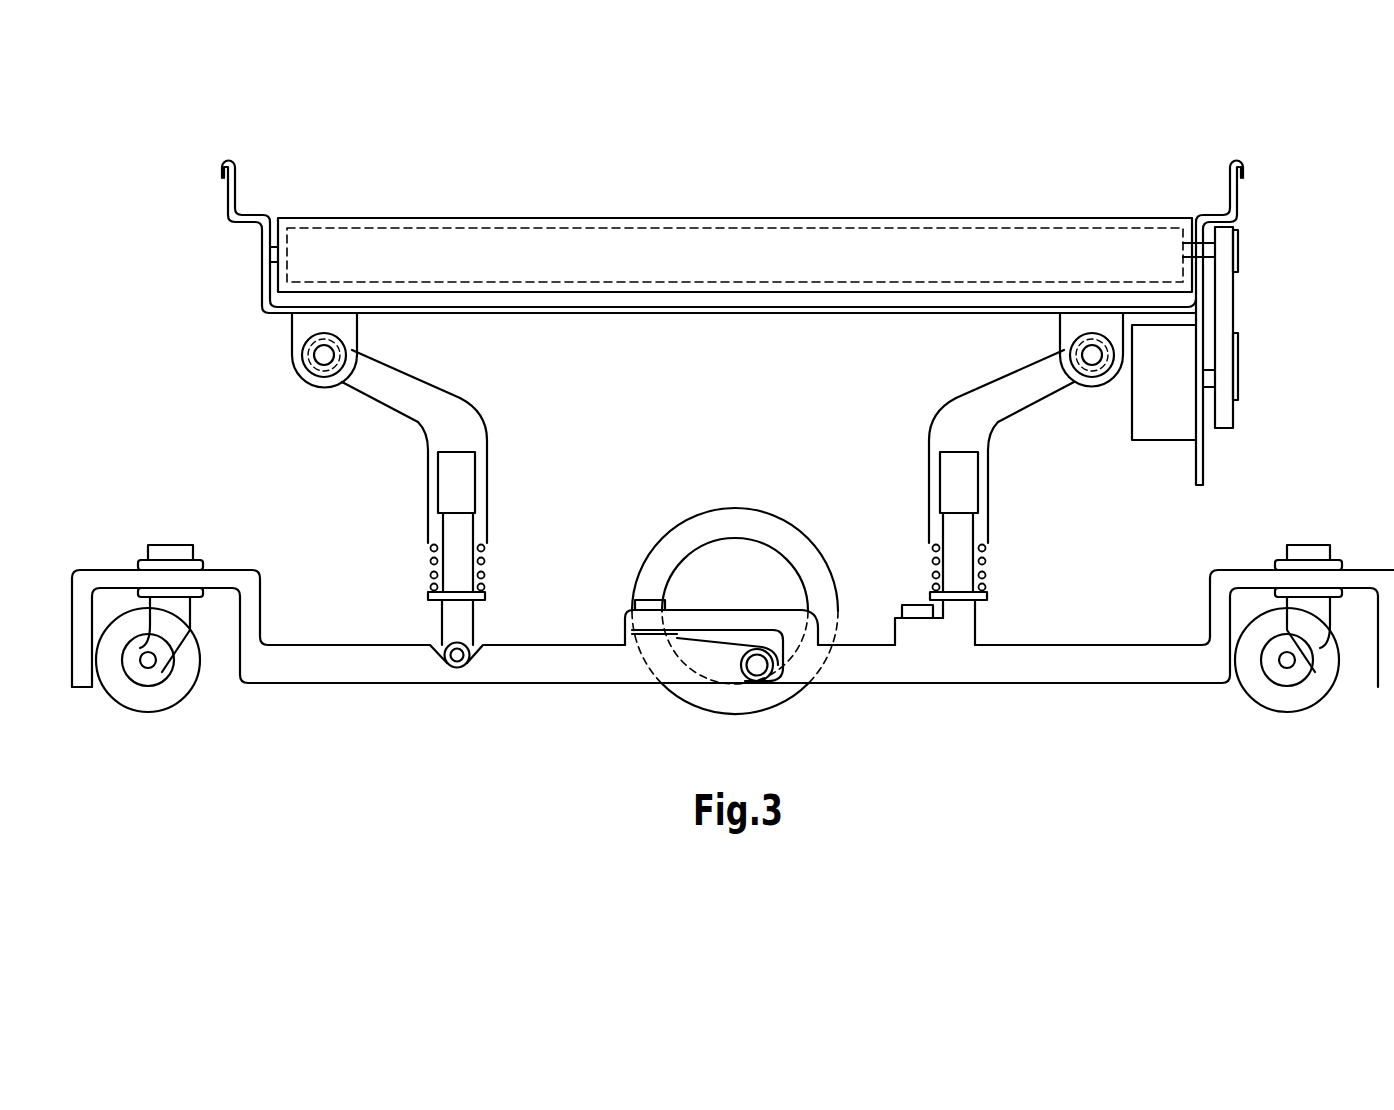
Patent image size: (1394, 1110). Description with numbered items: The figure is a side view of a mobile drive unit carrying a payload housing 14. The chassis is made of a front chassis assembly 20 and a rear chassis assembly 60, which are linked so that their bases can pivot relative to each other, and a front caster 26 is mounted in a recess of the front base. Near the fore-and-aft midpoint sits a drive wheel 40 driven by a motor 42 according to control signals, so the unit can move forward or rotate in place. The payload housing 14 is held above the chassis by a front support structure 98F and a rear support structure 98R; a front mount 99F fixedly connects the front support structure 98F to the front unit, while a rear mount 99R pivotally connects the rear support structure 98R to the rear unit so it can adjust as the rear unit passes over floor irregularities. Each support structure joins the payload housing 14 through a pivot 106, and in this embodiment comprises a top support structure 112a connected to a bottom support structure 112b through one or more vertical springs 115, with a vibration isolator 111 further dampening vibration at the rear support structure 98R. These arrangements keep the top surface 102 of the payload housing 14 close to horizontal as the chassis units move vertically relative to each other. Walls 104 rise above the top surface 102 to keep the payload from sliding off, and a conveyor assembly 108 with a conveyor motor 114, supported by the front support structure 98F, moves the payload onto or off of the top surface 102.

The payload housing 14 is at (167, 160).
The front chassis assembly 20 is at (847, 665).
The front caster 26 is at (165, 710).
The drive wheel 40 is at (748, 508).
The motor 42 is at (757, 580).
The rear chassis assembly 60 is at (332, 683).
The front support structure 98F is at (963, 620).
The rear support structure 98R is at (427, 453).
The front mount 99F is at (918, 618).
The rear mount 99R is at (465, 662).
The top surface 102 is at (586, 218).
The wall 104 is at (229, 158).
The pivot 106 is at (324, 355).
The conveyor assembly 108 is at (1222, 300).
The vibration isolator 111 is at (300, 362).
The top support structure 112a is at (427, 397).
The bottom support structure 112b is at (456, 570).
The conveyor motor 114 is at (1148, 403).
The vertical spring 115 is at (482, 554).